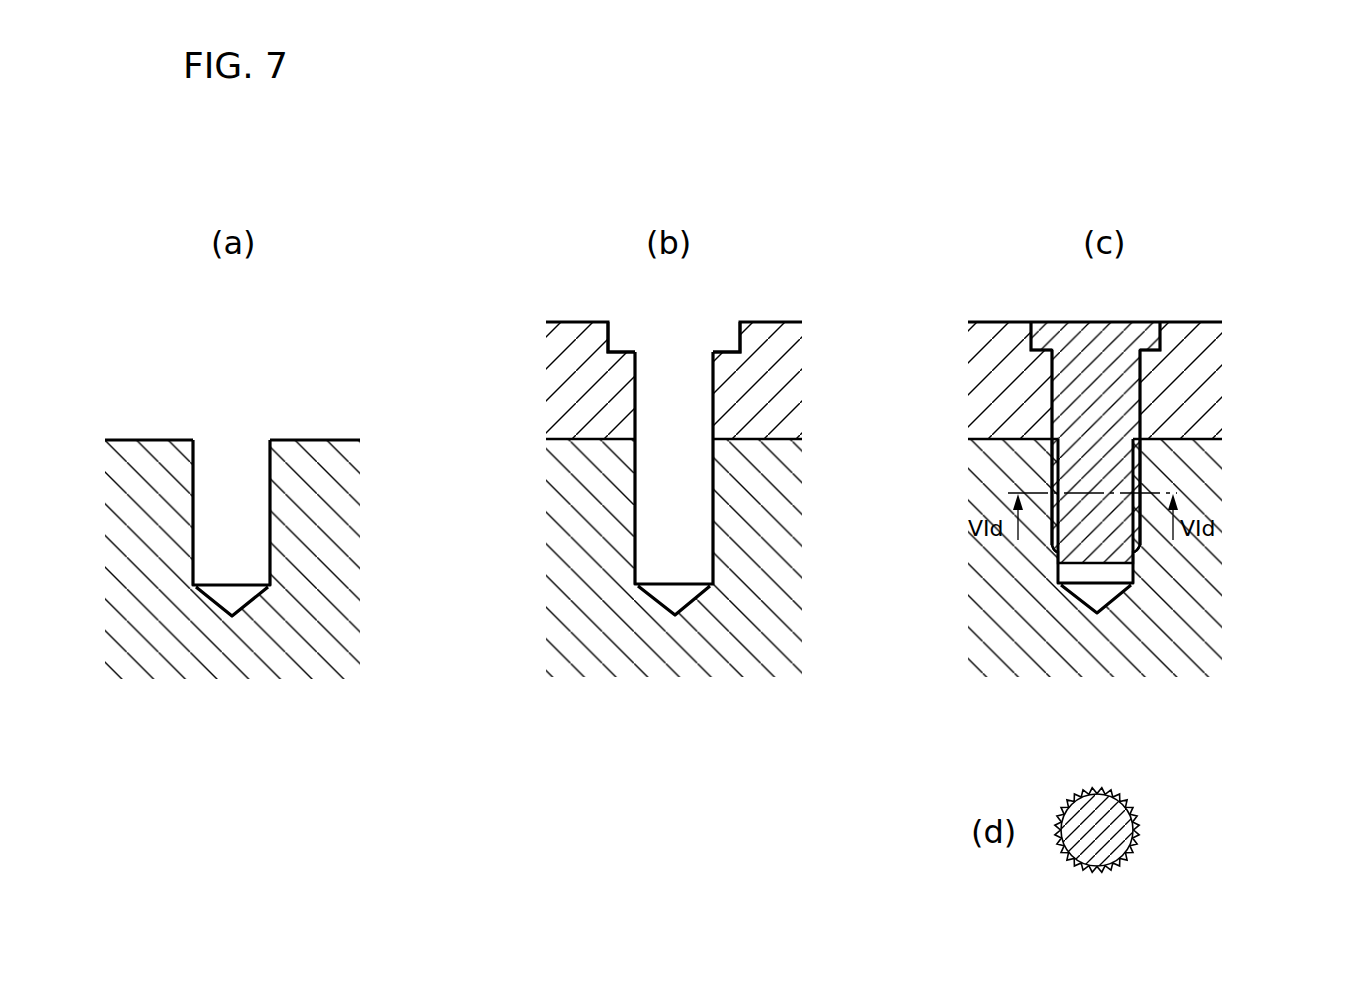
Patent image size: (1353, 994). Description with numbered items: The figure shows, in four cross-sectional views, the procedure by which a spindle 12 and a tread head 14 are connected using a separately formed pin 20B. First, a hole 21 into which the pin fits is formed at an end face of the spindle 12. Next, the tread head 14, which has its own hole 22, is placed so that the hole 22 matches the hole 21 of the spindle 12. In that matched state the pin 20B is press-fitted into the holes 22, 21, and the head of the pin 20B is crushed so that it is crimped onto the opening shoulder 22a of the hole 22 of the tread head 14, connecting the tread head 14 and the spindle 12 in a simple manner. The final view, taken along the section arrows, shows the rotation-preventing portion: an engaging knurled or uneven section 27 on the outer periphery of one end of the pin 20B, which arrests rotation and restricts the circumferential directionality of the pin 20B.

The spindle 12 is at (145, 658).
The tread head 14 is at (568, 348).
The hole 21 is at (268, 526).
The hole 22 is at (712, 377).
The opening shoulder 22a is at (1046, 348).
The pin 20B is at (1117, 352).
The knurled or uneven section 27 is at (1137, 538).